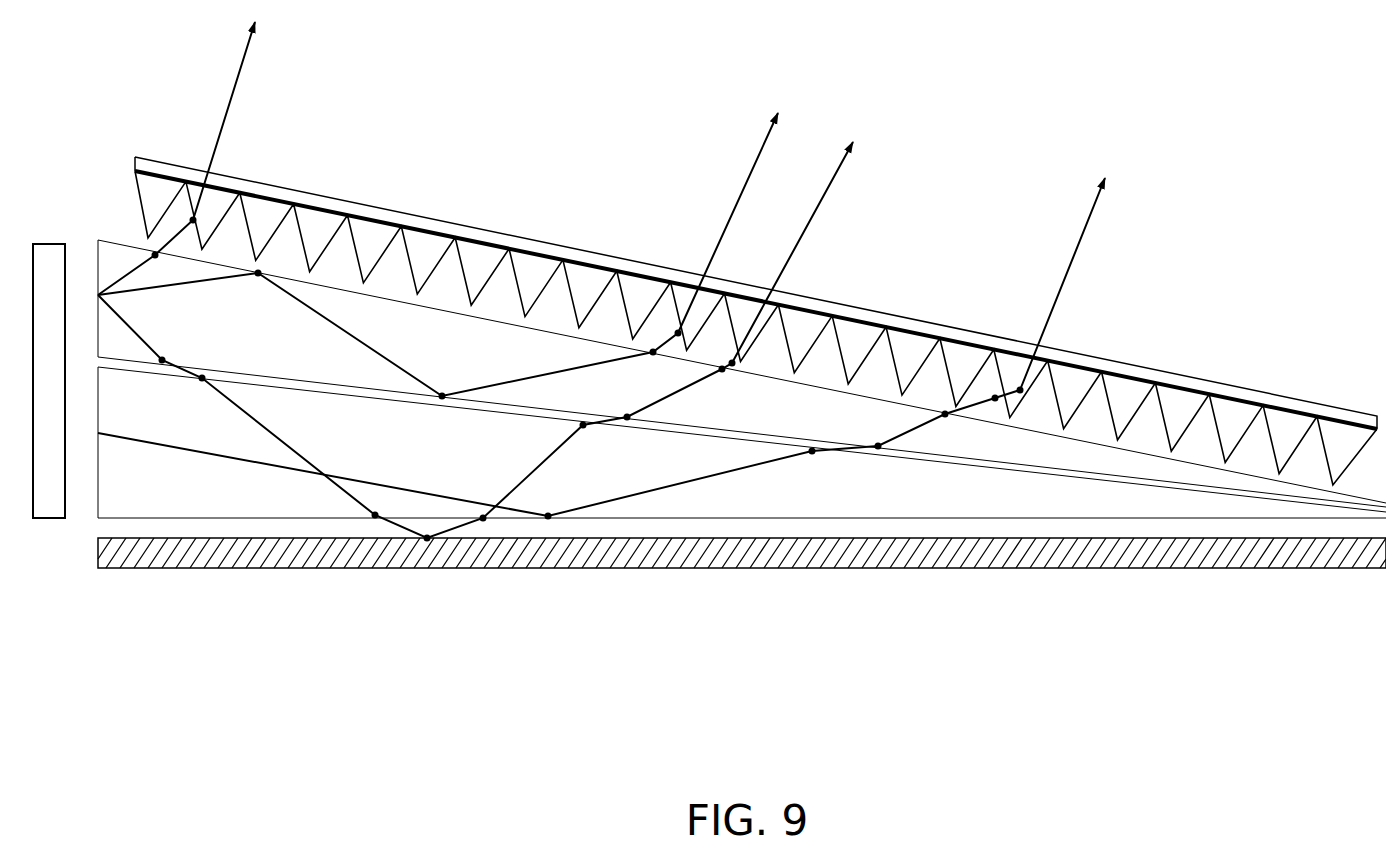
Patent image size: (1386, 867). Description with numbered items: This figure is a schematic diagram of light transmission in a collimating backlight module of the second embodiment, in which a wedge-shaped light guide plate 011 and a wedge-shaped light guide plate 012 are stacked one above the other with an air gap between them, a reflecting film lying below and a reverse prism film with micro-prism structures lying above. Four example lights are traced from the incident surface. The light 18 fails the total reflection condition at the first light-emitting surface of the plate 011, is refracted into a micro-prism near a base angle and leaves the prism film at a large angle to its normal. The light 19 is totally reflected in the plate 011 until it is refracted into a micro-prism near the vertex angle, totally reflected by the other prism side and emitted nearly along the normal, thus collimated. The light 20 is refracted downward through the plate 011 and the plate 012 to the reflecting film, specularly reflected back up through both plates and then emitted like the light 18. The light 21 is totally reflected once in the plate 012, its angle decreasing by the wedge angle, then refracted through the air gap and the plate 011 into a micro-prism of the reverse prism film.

The wedge-shaped light guide plate 011 is at (432, 340).
The wedge-shaped light guide plate 012 is at (887, 492).
The light 18 is at (176, 158).
The light 19 is at (438, 256).
The light 20 is at (475, 342).
The light 21 is at (601, 349).